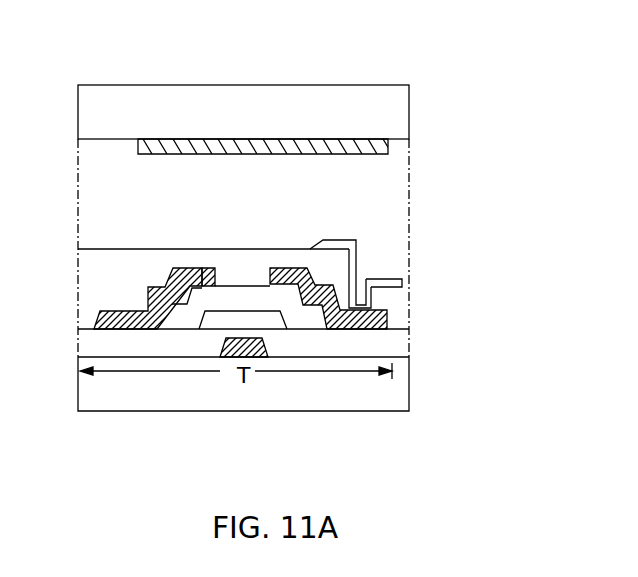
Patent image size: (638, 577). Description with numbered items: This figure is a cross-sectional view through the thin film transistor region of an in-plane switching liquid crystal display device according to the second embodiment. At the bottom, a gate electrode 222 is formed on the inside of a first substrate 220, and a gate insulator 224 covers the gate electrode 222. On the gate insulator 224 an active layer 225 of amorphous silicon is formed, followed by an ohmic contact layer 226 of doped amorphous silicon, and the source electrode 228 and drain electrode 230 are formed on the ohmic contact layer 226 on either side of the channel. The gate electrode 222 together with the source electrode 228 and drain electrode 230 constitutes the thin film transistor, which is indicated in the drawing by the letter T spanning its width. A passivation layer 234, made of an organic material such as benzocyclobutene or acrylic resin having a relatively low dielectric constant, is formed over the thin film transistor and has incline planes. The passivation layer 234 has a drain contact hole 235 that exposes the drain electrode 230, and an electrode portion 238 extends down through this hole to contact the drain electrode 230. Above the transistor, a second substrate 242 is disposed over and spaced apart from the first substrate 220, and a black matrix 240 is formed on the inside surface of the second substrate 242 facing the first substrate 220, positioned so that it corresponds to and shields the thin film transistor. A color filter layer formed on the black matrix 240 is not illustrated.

The first substrate 220 is at (333, 401).
The gate electrode 222 is at (232, 362).
The gate insulator 224 is at (134, 350).
The active layer 225 is at (241, 297).
The ohmic contact layer 226 is at (204, 268).
The source electrode 228 is at (158, 287).
The drain electrode 230 is at (280, 268).
The passivation layer 234 is at (102, 249).
The drain contact hole 235 is at (364, 268).
The contact portion 238 is at (403, 283).
The black matrix 240 is at (169, 146).
The second substrate 242 is at (270, 102).